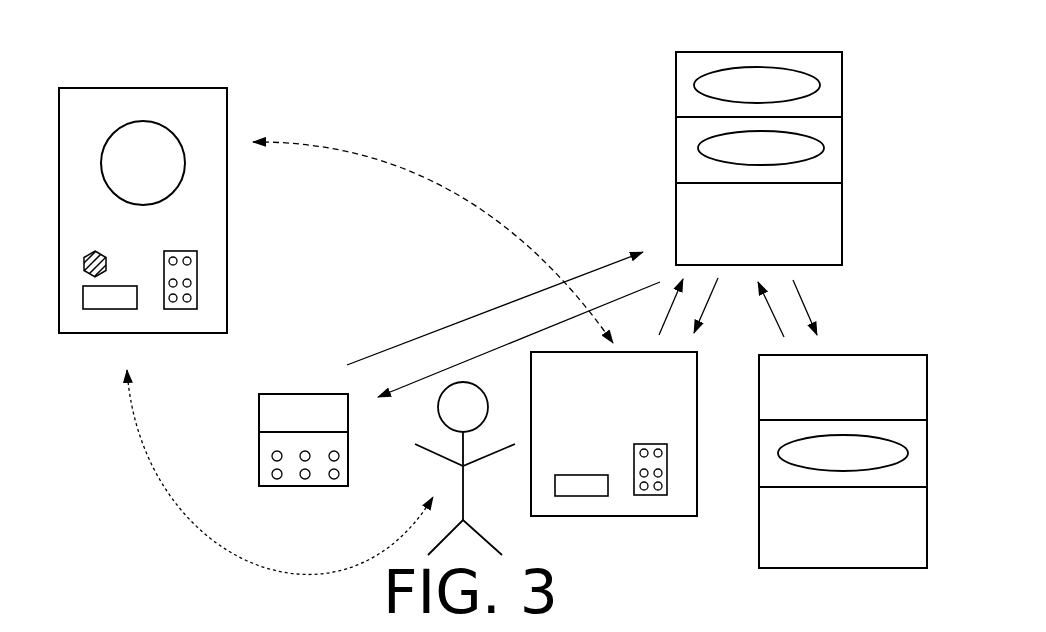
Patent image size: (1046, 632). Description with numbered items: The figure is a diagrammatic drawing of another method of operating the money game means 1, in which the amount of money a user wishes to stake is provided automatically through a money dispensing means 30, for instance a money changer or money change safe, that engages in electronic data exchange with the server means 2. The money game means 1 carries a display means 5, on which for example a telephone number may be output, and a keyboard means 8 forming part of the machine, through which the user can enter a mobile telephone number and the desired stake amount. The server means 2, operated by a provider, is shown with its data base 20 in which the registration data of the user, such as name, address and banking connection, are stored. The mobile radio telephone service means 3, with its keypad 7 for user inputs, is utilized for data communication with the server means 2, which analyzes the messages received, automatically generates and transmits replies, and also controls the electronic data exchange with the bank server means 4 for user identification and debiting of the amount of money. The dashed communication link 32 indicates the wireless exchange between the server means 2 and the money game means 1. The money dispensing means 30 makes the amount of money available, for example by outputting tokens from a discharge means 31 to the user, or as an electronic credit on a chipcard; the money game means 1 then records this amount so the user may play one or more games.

The money game means 1 is at (166, 208).
The server means 2 is at (803, 158).
The data base 20 is at (835, 223).
The mobile radio telephone service means 3 is at (268, 405).
The bank server means 4 is at (888, 383).
The display means 5 is at (93, 301).
The keypad 7 is at (268, 465).
The keyboard means 8 is at (192, 272).
The money dispensing means 30 is at (644, 466).
The discharge means 31 is at (583, 488).
The wireless communication link 32 is at (413, 175).